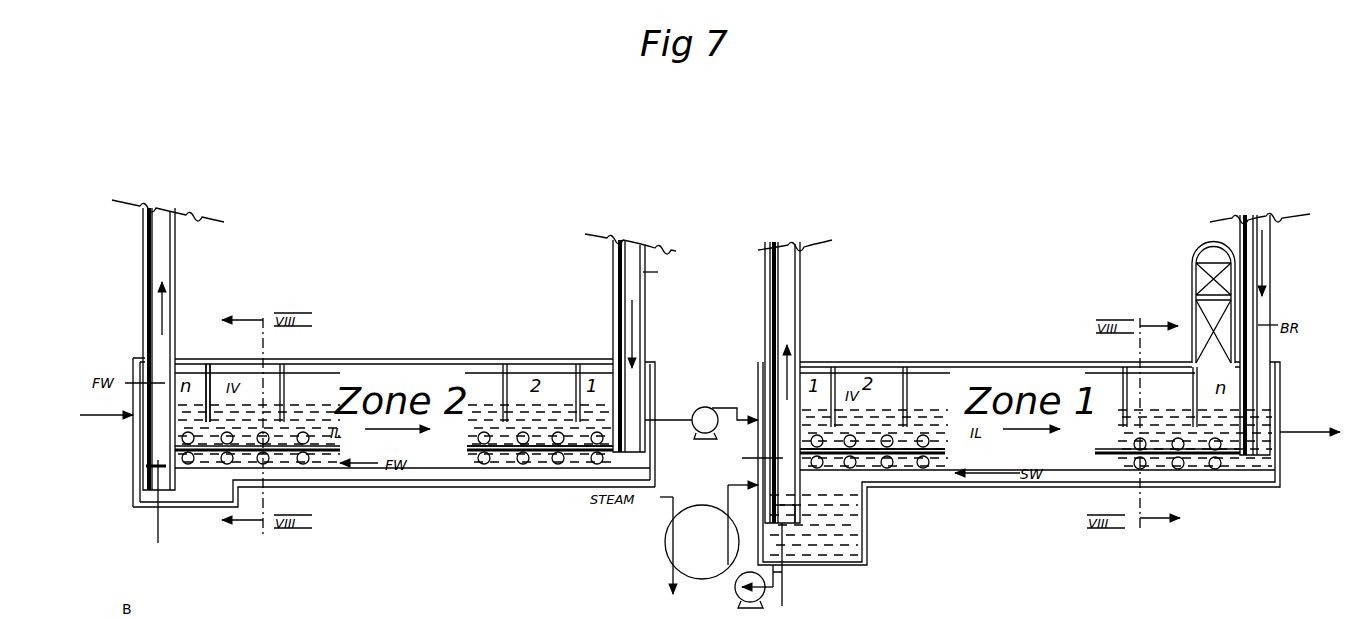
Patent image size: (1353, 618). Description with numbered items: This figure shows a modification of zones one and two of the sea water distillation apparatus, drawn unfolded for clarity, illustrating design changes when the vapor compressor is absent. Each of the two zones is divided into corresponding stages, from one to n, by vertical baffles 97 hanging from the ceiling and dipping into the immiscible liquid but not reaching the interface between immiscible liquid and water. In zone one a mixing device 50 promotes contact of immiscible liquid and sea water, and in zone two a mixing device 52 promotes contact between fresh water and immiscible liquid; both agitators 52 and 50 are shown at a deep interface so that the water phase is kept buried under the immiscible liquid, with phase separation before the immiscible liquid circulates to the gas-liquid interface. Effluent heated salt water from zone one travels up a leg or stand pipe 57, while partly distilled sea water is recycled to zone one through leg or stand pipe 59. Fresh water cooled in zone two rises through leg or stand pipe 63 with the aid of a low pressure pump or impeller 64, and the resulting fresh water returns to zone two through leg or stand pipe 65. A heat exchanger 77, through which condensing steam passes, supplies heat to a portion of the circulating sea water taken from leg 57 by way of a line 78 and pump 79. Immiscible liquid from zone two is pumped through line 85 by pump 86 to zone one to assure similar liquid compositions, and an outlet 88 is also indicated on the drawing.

The mixing device 50 is at (906, 456).
The mixing device 52 is at (546, 456).
The leg or stand pipe 57 is at (801, 254).
The leg or stand pipe 59 is at (1271, 245).
The leg or stand pipe 63 is at (176, 246).
The low pressure pump or impeller 64 is at (135, 468).
The leg or stand pipe 65 is at (616, 284).
The heat exchanger 77 is at (665, 542).
The line 78 is at (777, 572).
The pump 79 is at (748, 612).
The line 85 is at (748, 409).
The pump 86 is at (698, 407).
The outlet line 88 is at (102, 412).
The vertical baffles 97 is at (212, 372).